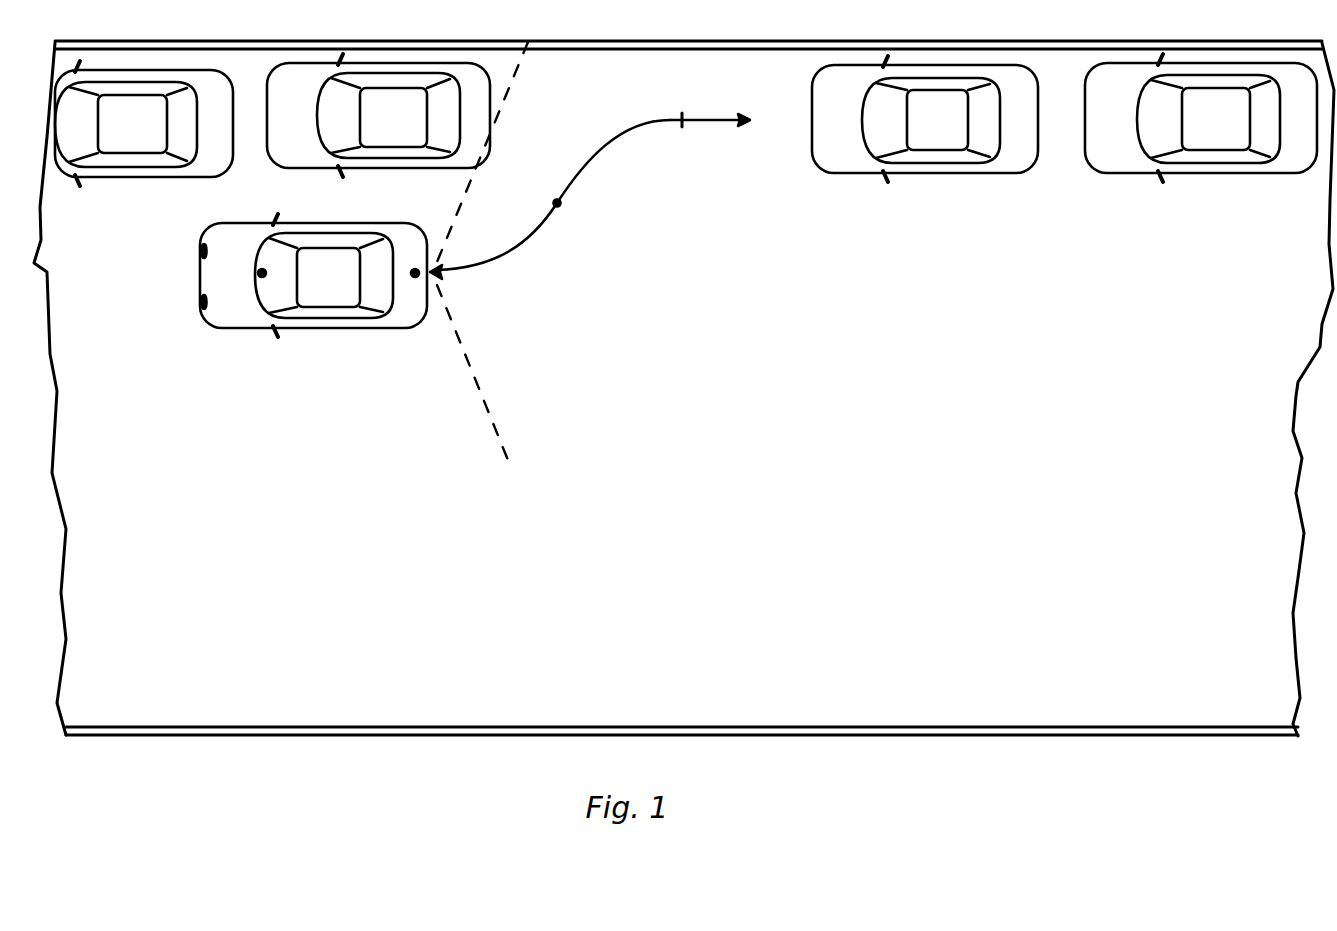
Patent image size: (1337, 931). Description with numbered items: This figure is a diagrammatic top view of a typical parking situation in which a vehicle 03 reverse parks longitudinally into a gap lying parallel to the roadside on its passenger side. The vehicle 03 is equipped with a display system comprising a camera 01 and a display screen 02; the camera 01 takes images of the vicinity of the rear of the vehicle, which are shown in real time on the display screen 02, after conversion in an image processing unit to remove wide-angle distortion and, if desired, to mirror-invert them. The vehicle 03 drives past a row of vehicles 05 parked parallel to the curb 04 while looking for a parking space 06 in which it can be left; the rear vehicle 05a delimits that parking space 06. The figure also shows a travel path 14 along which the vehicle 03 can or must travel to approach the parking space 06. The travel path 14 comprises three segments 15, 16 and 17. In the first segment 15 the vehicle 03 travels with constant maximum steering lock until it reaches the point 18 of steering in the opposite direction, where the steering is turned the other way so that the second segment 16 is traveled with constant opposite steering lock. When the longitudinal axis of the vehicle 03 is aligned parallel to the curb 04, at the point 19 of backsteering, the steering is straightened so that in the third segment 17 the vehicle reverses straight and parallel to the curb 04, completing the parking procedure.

The camera 01 is at (440, 272).
The display screen 02 is at (262, 280).
The vehicle 03 is at (338, 315).
The curb 04 is at (707, 48).
The vehicles 05 is at (135, 162).
The rear vehicle 05a is at (940, 157).
The parking space 06 is at (693, 104).
The travel path 14 is at (593, 176).
The first segment 15 is at (515, 247).
The second segment 16 is at (590, 153).
The third segment 17 is at (707, 123).
The point of steering in the opposite direction 18 is at (557, 200).
The point of backsteering 19 is at (682, 127).